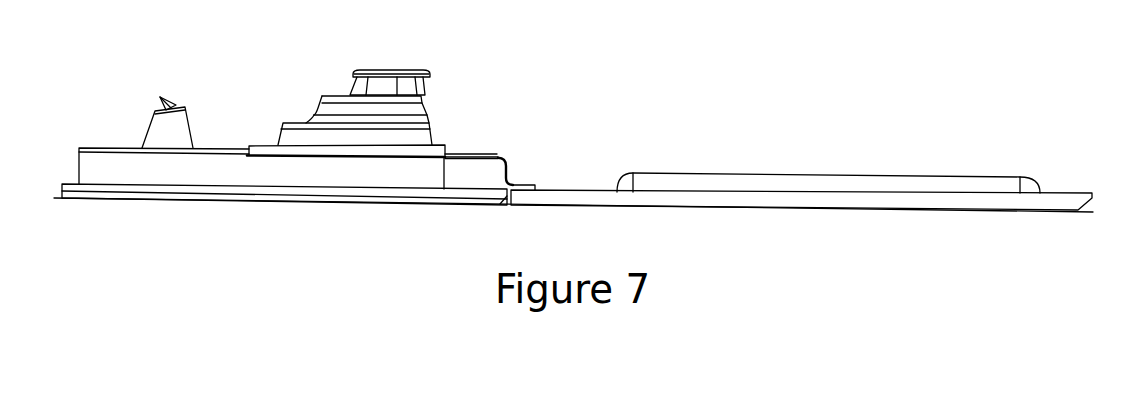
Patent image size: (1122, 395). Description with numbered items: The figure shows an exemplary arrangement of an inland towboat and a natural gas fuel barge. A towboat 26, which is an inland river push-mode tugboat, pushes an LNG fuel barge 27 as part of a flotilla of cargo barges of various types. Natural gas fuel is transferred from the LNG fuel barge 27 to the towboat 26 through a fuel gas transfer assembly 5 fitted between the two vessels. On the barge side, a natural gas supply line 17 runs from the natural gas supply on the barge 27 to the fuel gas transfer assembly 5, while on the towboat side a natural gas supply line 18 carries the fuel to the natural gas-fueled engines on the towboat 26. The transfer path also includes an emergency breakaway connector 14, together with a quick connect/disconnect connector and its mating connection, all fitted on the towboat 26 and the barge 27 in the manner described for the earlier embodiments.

The fuel gas transfer assembly 5 is at (512, 182).
The emergency breakaway connector 14 is at (491, 157).
The natural gas supply line 17 is at (540, 185).
The natural gas supply line 18 is at (248, 156).
The towboat 26 is at (322, 100).
The LNG fuel barge 27 is at (677, 173).